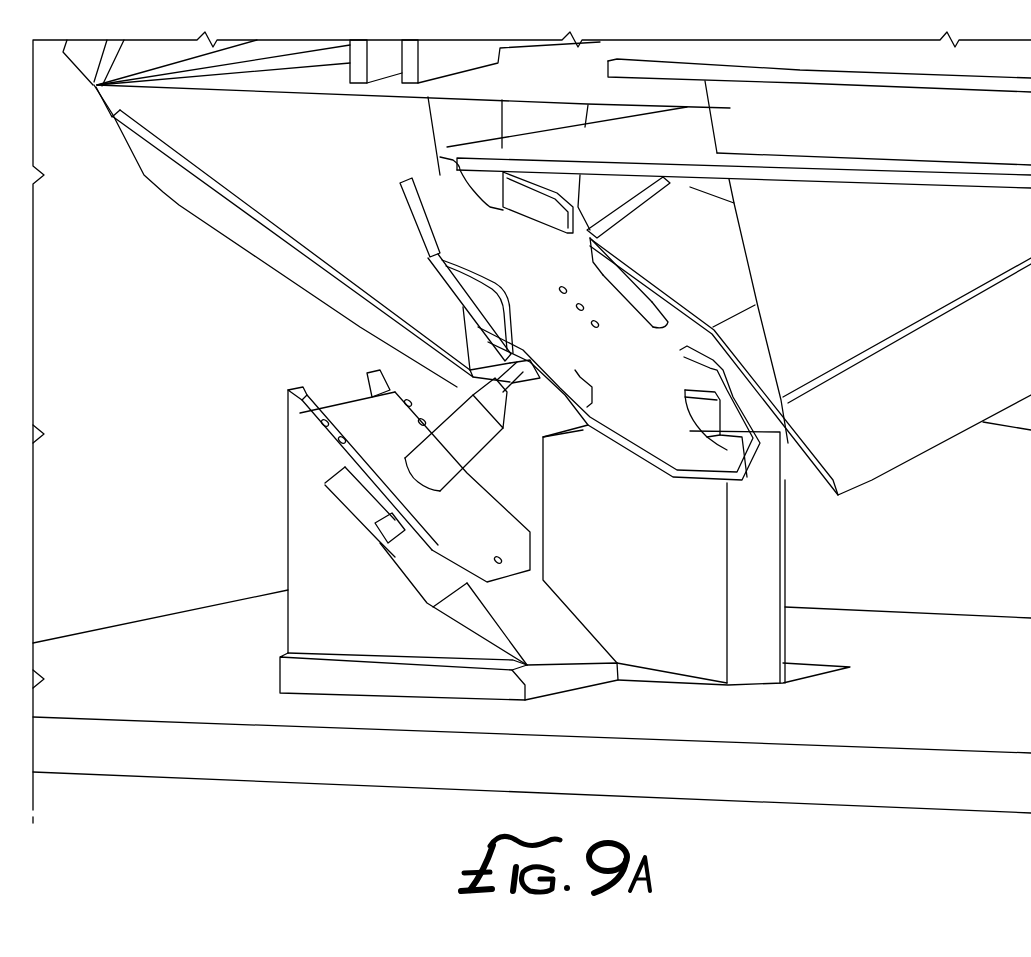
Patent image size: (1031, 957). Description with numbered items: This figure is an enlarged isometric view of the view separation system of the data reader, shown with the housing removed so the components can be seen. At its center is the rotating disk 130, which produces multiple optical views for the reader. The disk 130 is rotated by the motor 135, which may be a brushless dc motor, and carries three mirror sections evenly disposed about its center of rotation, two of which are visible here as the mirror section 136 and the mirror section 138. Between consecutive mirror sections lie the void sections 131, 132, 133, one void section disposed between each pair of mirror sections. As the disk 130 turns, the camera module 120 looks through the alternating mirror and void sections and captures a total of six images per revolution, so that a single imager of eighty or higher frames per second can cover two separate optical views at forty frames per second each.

The camera module 120 is at (697, 580).
The rotating disk 130 is at (429, 178).
The void section 131 is at (543, 347).
The void section 132 is at (683, 377).
The void section 133 is at (550, 223).
The motor 135 is at (325, 547).
The mirror section 136 is at (640, 460).
The mirror section 138 is at (412, 231).